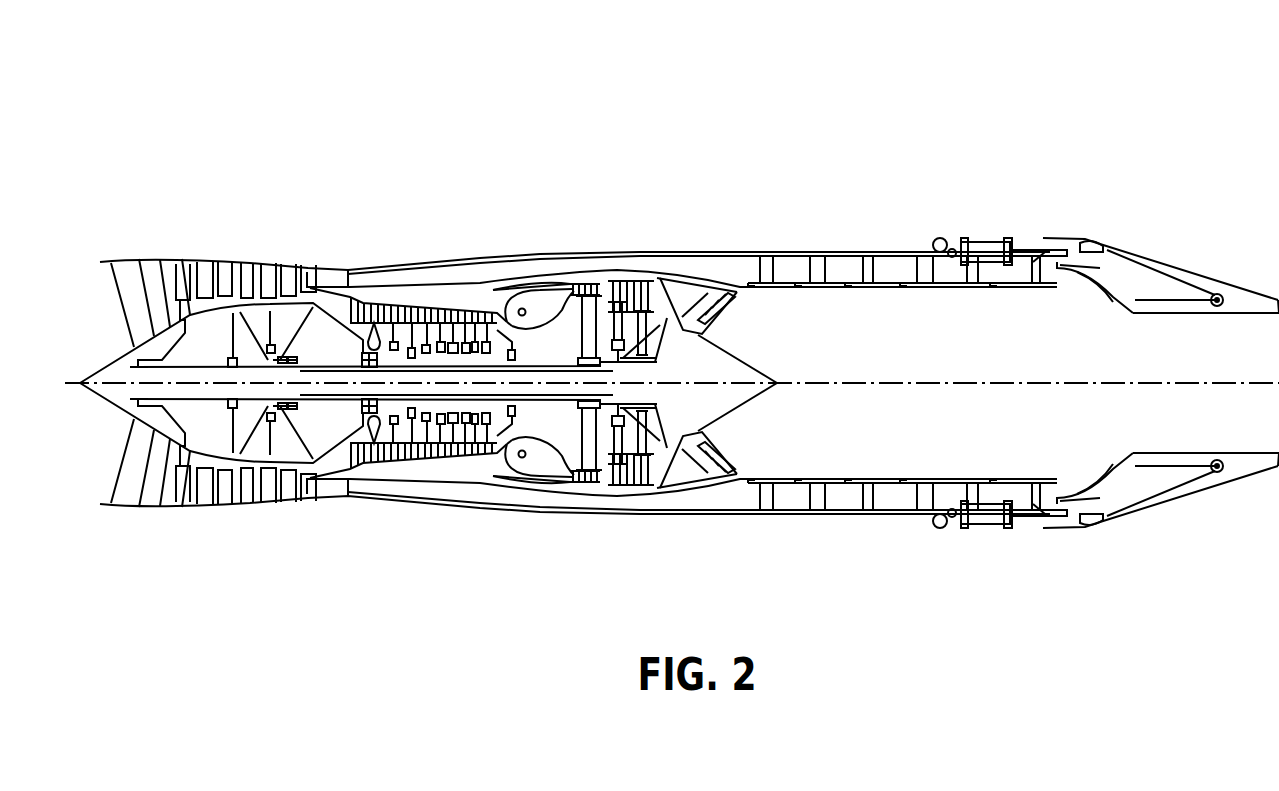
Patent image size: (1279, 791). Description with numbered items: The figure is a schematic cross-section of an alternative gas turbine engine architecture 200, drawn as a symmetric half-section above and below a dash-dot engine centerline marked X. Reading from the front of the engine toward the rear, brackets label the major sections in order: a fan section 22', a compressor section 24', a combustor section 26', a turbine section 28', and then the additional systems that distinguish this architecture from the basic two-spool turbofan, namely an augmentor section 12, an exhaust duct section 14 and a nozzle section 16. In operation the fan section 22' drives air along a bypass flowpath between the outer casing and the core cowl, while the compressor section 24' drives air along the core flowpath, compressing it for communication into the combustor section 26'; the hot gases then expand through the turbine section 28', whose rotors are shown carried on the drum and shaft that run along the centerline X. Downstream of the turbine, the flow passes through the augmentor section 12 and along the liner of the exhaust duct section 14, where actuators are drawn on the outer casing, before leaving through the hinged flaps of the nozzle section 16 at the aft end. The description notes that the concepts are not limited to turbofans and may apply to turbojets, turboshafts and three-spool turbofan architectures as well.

The alternative engine architecture 200 is at (935, 107).
The fan section 22' is at (208, 321).
The compressor section 24' is at (411, 307).
The combustor section 26' is at (547, 309).
The turbine section 28' is at (576, 310).
The augmentor section 12 is at (657, 192).
The exhaust duct section 14 is at (1050, 192).
The nozzle section 16 is at (1050, 192).
The engine centerline axis X is at (942, 386).